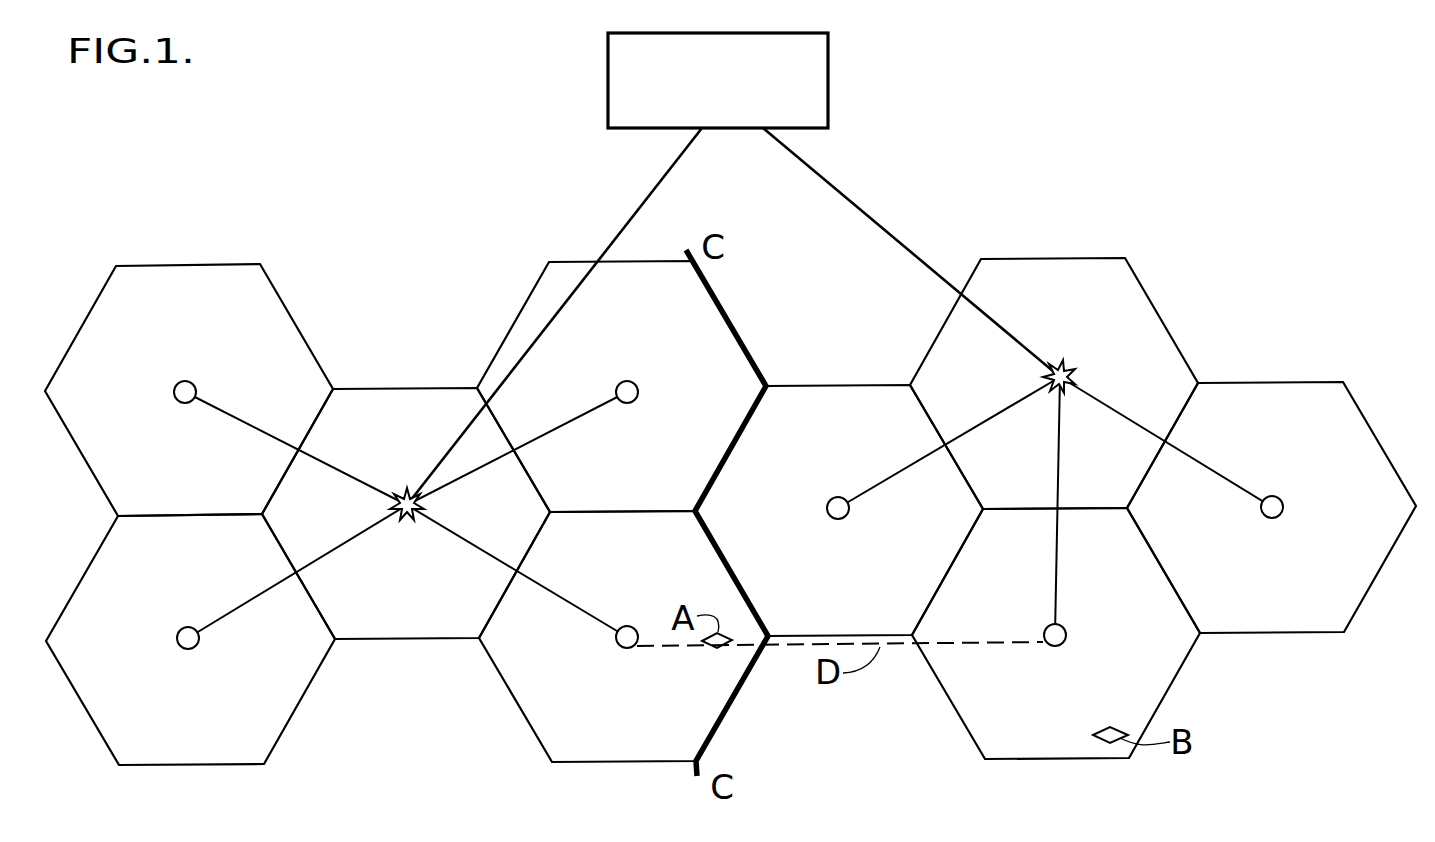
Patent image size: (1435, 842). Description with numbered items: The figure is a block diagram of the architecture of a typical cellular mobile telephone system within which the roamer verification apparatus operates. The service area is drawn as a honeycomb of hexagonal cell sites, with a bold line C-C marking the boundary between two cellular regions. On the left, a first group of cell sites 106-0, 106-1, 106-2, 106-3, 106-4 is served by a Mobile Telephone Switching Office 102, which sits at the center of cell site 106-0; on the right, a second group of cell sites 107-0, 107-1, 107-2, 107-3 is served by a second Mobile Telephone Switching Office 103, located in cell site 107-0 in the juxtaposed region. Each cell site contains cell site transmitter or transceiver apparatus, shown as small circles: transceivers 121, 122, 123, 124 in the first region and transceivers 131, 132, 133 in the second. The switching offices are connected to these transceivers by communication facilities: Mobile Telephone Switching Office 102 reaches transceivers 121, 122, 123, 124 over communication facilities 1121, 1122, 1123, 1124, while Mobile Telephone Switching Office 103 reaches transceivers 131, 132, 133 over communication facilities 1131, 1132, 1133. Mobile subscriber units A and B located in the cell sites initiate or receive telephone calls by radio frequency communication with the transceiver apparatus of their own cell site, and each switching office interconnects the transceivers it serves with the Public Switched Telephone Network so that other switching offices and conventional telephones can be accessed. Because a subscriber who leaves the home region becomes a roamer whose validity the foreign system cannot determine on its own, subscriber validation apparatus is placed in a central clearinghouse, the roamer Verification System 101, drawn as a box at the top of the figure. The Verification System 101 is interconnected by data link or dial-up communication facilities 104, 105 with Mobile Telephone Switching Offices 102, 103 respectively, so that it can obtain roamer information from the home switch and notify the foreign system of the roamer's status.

The roamer verification system 101 is at (828, 65).
The Mobile Telephone Switching Office 102 is at (407, 522).
The Mobile Telephone Switching Office 103 is at (1065, 364).
The communication facility 104 is at (659, 183).
The communication facility 105 is at (826, 181).
The cell site 106-0 is at (380, 388).
The cell site 106-1 is at (163, 265).
The cell site 106-2 is at (278, 733).
The cell site 106-3 is at (563, 261).
The cell site 106-4 is at (643, 762).
The cell site 107-0 is at (1042, 259).
The cell site 107-1 is at (863, 384).
The cell site 107-2 is at (1070, 758).
The cell site 107-3 is at (1327, 633).
The cell site transmitter 121 is at (175, 385).
The cell site transmitter 122 is at (183, 628).
The cell site transmitter 123 is at (640, 383).
The cell site transmitter 124 is at (627, 648).
The cell site transmitter 131 is at (848, 518).
The cell site transmitter 132 is at (1055, 647).
The cell site transmitter 133 is at (1272, 518).
The communication facility 1121 is at (280, 441).
The communication facility 1122 is at (222, 618).
The communication facility 1123 is at (538, 438).
The communication facility 1124 is at (570, 603).
The communication facility 1131 is at (910, 466).
The communication facility 1132 is at (1058, 592).
The communication facility 1133 is at (1202, 462).